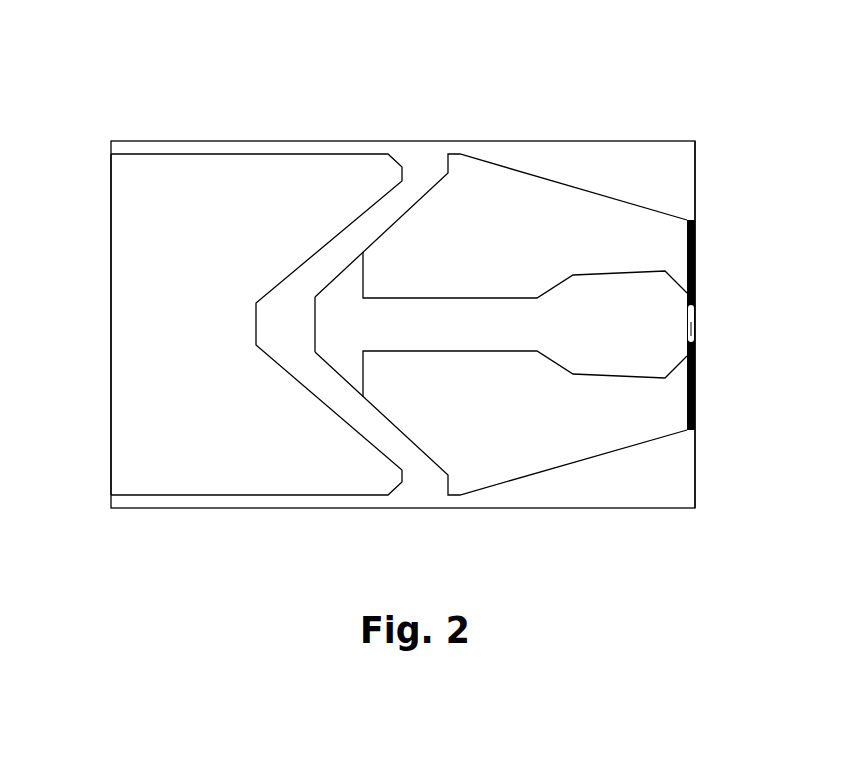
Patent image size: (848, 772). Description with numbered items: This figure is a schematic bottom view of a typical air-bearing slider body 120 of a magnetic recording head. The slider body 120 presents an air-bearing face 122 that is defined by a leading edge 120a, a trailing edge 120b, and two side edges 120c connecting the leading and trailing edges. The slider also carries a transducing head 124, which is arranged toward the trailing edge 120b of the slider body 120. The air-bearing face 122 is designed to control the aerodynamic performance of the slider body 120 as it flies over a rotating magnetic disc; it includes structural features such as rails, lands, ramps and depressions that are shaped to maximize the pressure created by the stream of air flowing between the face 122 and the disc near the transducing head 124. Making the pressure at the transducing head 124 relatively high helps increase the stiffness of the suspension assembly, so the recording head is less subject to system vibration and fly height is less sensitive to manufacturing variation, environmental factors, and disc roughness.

The air-bearing slider body 120 is at (430, 73).
The leading edge 120a is at (110, 215).
The trailing edge 120b is at (696, 160).
The side edges 120c is at (264, 140).
The air-bearing face 122 is at (528, 168).
The transducing head 124 is at (686, 322).